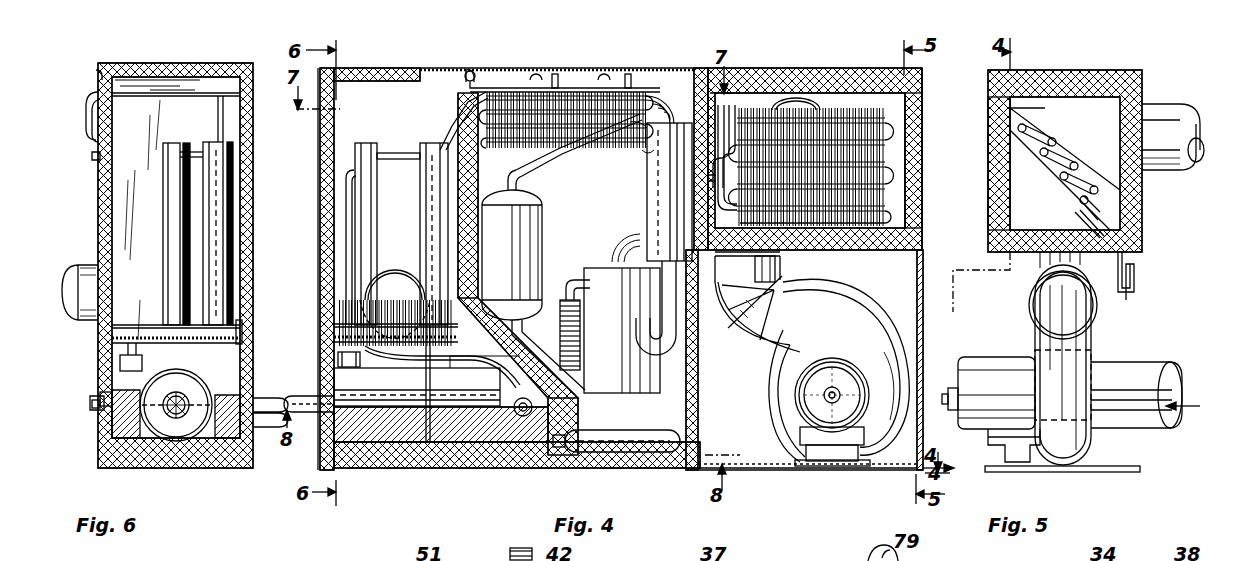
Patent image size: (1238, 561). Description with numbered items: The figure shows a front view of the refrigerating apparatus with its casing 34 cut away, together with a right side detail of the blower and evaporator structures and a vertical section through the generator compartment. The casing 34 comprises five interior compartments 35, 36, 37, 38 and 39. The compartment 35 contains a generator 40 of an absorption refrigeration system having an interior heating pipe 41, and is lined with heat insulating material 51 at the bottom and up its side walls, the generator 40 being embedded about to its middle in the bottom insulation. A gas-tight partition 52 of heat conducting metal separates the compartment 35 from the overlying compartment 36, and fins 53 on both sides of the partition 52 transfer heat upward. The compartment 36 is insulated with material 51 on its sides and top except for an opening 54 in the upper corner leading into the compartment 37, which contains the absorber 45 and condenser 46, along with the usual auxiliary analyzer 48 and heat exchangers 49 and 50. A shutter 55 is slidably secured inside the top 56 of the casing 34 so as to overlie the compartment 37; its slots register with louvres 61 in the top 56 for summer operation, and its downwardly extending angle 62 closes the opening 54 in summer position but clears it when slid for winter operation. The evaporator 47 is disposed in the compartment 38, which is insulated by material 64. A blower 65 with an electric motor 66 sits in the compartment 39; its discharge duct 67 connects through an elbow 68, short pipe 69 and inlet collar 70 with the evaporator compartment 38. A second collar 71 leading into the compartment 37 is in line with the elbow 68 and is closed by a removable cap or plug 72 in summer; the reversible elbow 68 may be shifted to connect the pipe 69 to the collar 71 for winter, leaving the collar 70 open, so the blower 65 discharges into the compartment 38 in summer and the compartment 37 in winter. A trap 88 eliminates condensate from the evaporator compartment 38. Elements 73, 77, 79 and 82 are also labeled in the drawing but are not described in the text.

In FIG. 6, the casing 34 is at (92, 118).
In FIG. 4, the casing 34 is at (760, 72).
In FIG. 4, the generator compartment 35 is at (340, 358).
In FIG. 6, the compartment 36 is at (160, 93).
In FIG. 4, the compartment 36 is at (380, 86).
In FIG. 4, the absorber and condenser compartment 37 is at (660, 90).
In FIG. 4, the evaporator compartment 38 is at (908, 104).
In FIG. 5, the evaporator compartment 38 is at (1058, 100).
In FIG. 4, the blower compartment 39 is at (757, 470).
In FIG. 6, the generator 40 is at (145, 398).
In FIG. 4, the generator 40 is at (346, 386).
In FIG. 6, the interior heating pipe 41 is at (184, 418).
In FIG. 4, the interior heating pipe 41 is at (296, 396).
In FIG. 4, the absorber 45 is at (594, 270).
In FIG. 4, the condenser 46 is at (592, 108).
In FIG. 4, the evaporator 47 is at (858, 126).
In FIG. 5, the evaporator 47 is at (1052, 134).
In FIG. 6, the analyzer 48 is at (205, 152).
In FIG. 4, the analyzer 48 is at (428, 152).
In FIG. 4, the heat exchanger 49 is at (647, 172).
In FIG. 4, the heat exchanger 50 is at (626, 440).
In FIG. 4, the heat insulating material 51 is at (320, 136).
In FIG. 6, the gas-tight partition 52 is at (112, 340).
In FIG. 4, the gas-tight partition 52 is at (340, 336).
In FIG. 6, the fins 53 is at (140, 322).
In FIG. 4, the fins 53 is at (340, 324).
In FIG. 4, the opening 54 is at (460, 108).
In FIG. 4, the shutter 55 is at (548, 82).
In FIG. 4, the top 56 is at (460, 70).
In FIG. 4, the louvres 61 is at (508, 84).
In FIG. 6, the downwardly extending angle 62 is at (100, 74).
In FIG. 4, the downwardly extending angle 62 is at (470, 70).
In FIG. 4, the insulating material 64 is at (918, 182).
In FIG. 5, the insulating material 64 is at (1000, 180).
In FIG. 4, the blower 65 is at (866, 336).
In FIG. 5, the blower 65 is at (1090, 340).
In FIG. 4, the electric motor 66 is at (812, 400).
In FIG. 5, the electric motor 66 is at (980, 368).
In FIG. 4, the discharge duct 67 is at (815, 314).
In FIG. 4, the elbow 68 is at (780, 300).
In FIG. 4, the short pipe 69 is at (772, 272).
In FIG. 4, the inlet collar 70 is at (800, 258).
In FIG. 4, the second collar 71 is at (700, 350).
In FIG. 4, the removable cap or plug 72 is at (700, 336).
In FIG. 6, the outlet pipe 73 is at (96, 410).
In FIG. 5, the outlet pipe 73 is at (1144, 376).
In FIG. 6, the pipe 77 is at (96, 160).
In FIG. 4, the pipe 77 is at (808, 104).
In FIG. 5, the pipe 77 is at (1162, 108).
In FIG. 6, the coil 79 is at (84, 268).
In FIG. 4, the coil 79 is at (398, 272).
In FIG. 6, the bracket 82 is at (250, 330).
In FIG. 5, the trap 88 is at (1136, 278).